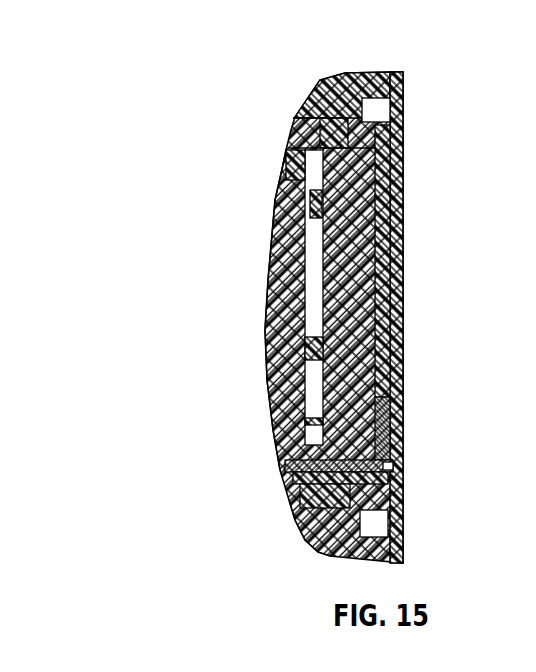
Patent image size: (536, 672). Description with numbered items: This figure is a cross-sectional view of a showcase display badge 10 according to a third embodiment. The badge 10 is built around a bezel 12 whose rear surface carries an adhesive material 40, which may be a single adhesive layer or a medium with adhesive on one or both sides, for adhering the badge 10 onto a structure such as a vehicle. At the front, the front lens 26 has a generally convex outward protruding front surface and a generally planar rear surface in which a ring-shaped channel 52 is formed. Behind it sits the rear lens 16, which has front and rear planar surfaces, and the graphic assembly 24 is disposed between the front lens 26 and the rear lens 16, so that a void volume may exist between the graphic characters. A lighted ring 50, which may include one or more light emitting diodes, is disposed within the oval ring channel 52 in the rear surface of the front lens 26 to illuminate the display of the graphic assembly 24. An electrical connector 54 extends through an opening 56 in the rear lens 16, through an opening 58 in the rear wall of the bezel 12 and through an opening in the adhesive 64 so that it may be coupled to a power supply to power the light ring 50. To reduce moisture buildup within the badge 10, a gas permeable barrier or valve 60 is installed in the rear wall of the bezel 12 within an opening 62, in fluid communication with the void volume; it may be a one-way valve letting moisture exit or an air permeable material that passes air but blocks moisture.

The showcase display badge 10 is at (134, 80).
The bezel 12 is at (333, 78).
The rear lens 16 is at (395, 246).
The graphic assembly 24 is at (300, 190).
The front lens 26 is at (280, 290).
The adhesive material 40 is at (402, 88).
The lighted ring 50 is at (292, 143).
The ring-shaped channel 52 is at (330, 176).
The electrical connector 54 is at (340, 542).
The opening 56 is at (385, 490).
The opening 58 is at (395, 462).
The gas permeable barrier or valve 60 is at (378, 404).
The opening 62 is at (380, 390).
The opening in adhesive 64 is at (392, 466).